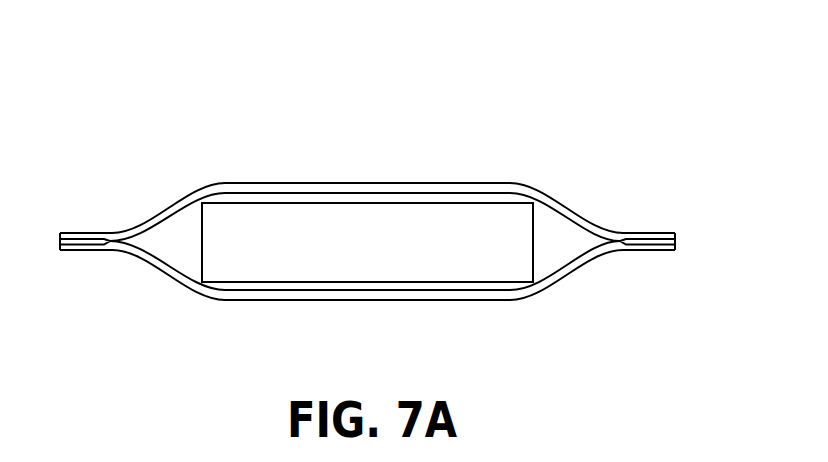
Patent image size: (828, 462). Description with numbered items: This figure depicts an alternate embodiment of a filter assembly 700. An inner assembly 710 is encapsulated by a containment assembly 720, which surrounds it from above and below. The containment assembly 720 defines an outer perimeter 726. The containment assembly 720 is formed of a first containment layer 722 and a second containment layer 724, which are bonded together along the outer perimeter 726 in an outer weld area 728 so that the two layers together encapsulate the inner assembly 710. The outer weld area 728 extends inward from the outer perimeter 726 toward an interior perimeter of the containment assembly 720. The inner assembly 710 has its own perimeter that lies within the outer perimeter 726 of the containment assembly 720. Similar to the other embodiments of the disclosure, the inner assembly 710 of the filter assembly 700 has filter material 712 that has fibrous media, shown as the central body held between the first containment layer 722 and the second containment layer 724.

The filter assembly 700 is at (285, 68).
The inner assembly 710 is at (552, 248).
The filter material 712 is at (390, 260).
The containment assembly 720 is at (601, 197).
The first containment layer 722 is at (177, 196).
The second containment layer 724 is at (182, 283).
The outer perimeter 726 is at (677, 240).
The outer weld area 728 is at (92, 232).